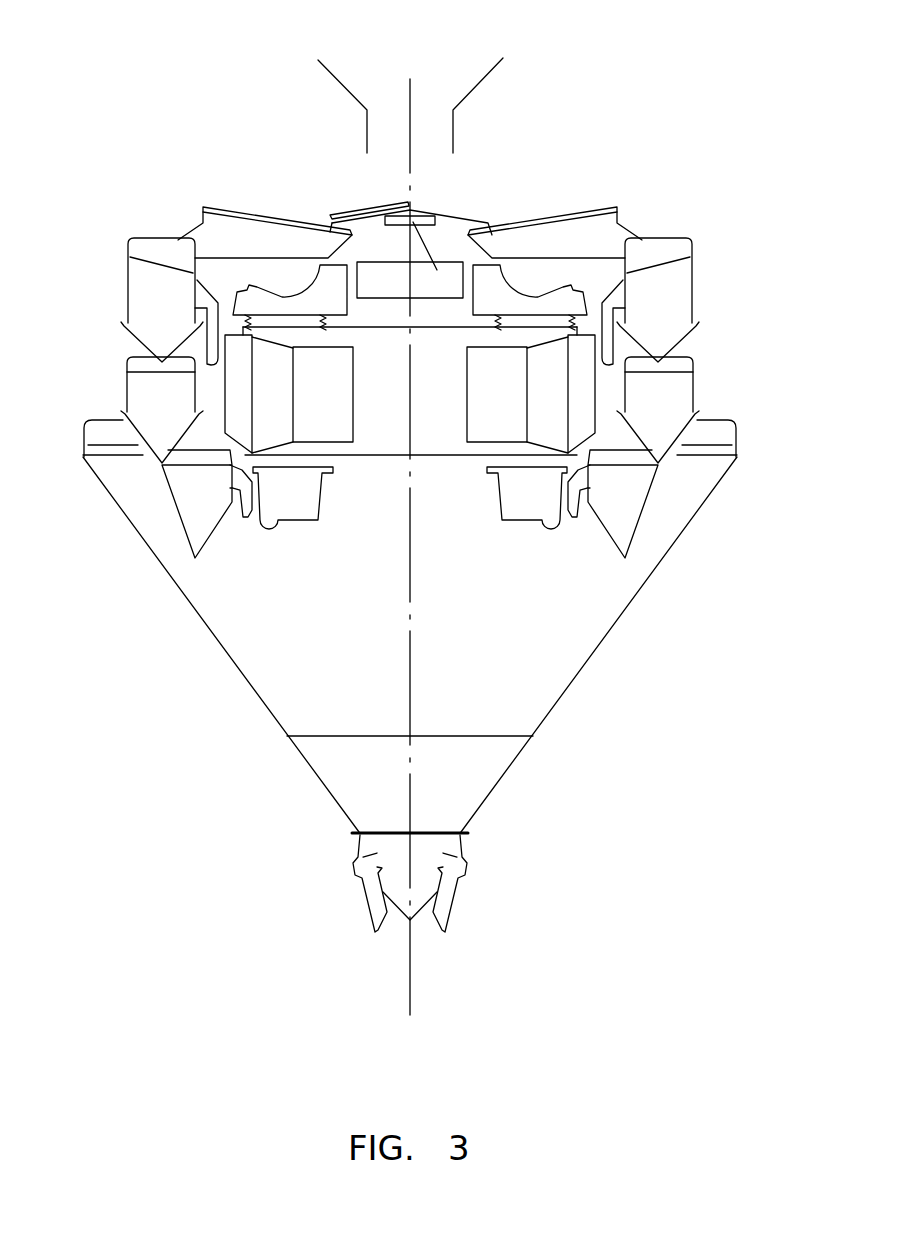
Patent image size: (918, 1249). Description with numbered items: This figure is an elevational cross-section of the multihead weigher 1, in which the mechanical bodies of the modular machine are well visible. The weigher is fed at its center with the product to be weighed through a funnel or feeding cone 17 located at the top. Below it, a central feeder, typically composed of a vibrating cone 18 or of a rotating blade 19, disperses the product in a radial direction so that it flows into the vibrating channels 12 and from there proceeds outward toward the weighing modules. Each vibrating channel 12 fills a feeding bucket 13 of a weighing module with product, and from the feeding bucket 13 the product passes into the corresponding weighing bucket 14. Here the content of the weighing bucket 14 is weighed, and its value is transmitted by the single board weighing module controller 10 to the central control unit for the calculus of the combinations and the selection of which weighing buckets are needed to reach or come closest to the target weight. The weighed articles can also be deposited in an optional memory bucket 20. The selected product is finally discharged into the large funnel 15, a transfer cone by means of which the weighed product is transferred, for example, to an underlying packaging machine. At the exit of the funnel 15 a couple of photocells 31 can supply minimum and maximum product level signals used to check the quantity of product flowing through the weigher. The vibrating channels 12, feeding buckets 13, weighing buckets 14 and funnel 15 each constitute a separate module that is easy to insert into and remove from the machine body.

The multihead weigher 1 is at (183, 167).
The single board weighing module controller 10 is at (465, 395).
The vibrating channel 12 is at (543, 213).
The feeding bucket 13 is at (692, 295).
The weighing bucket 14 is at (693, 390).
The funnel 15 is at (603, 633).
The feeding cone 17 is at (343, 80).
The vibrating cone 18 is at (452, 215).
The rotating blade 19 is at (373, 205).
The memory bucket 20 is at (642, 512).
The photocells 31 is at (363, 907).